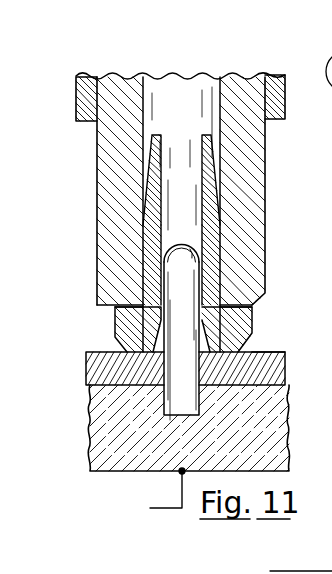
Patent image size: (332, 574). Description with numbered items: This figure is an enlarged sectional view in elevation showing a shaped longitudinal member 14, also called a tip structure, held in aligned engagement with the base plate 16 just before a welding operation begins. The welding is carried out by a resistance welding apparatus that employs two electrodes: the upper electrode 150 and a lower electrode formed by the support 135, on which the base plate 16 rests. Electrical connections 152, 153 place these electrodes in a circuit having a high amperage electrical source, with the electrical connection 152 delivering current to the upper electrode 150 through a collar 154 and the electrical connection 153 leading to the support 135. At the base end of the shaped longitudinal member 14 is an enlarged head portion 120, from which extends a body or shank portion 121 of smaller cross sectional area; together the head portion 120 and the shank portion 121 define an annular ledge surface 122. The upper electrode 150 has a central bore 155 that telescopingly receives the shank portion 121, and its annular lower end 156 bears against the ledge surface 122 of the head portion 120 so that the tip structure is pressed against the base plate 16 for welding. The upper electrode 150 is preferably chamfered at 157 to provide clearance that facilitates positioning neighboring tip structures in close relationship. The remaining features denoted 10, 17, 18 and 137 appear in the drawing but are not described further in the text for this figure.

The apparatus 10 is at (258, 570).
The shaped longitudinal member 14 is at (146, 168).
The base plate 16 is at (88, 370).
The opening 17 is at (260, 352).
The needle 18 is at (192, 370).
The head portion 120 is at (113, 330).
The body or shank portion 121 is at (145, 228).
The annular ledge surface 122 is at (122, 288).
The support 135 is at (137, 472).
The needle tip 137 is at (176, 256).
The upper electrode 150 is at (97, 131).
The electrical connection 152 is at (285, 97).
The electrical connection 153 is at (165, 510).
The collar 154 is at (77, 88).
The central bore 155 is at (156, 77).
The annular lower end 156 is at (115, 313).
The chamfer 157 is at (112, 306).